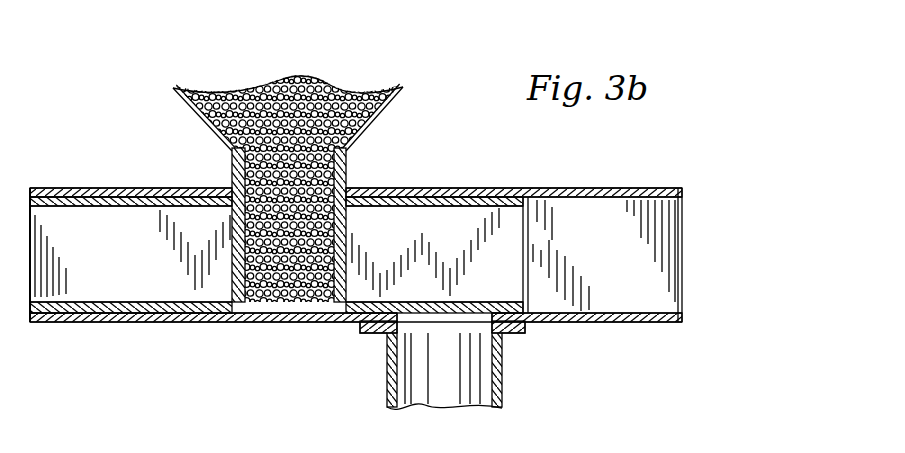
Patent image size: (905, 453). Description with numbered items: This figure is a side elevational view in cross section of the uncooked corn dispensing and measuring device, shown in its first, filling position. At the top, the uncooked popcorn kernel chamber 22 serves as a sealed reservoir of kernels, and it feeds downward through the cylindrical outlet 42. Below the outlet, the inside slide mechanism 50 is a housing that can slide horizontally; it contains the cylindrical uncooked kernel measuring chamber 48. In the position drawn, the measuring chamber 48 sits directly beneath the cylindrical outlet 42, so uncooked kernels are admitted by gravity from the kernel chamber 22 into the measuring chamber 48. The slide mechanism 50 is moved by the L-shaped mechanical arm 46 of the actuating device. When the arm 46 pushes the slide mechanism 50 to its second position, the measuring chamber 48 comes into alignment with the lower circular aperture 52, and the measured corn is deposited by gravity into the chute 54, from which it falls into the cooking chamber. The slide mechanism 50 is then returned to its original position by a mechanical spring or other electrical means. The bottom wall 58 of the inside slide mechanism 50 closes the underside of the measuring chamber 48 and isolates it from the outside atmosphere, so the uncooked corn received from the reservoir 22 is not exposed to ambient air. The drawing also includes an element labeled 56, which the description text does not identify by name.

The uncooked popcorn kernel chamber 22 is at (403, 87).
The cylindrical outlet 42 is at (347, 186).
The mechanical arm 46 is at (712, 156).
The uncooked kernel measuring chamber 48 is at (230, 228).
The inside slide mechanism 50 is at (532, 248).
The lower circular aperture 52 is at (418, 334).
The chute 54 is at (502, 373).
The outer housing 56 is at (525, 228).
The bottom wall 58 is at (508, 300).